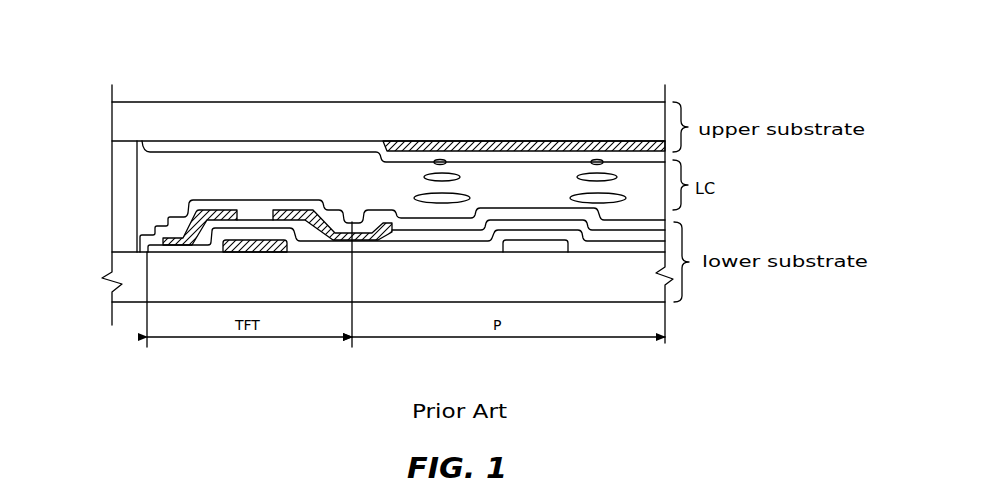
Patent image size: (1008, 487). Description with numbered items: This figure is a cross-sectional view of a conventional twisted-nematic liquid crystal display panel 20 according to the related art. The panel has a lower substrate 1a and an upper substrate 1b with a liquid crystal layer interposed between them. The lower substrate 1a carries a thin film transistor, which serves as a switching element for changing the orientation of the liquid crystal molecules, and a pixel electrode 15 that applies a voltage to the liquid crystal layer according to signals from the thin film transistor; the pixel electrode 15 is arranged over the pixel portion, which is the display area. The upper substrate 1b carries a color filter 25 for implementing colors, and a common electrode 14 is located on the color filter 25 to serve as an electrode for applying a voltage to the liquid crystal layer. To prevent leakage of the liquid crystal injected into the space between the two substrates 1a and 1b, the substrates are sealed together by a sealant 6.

The liquid crystal display panel 20 is at (250, 90).
The lower substrate 1a is at (335, 112).
The upper substrate 1b is at (128, 295).
The sealant 6 is at (113, 196).
The common electrode 14 is at (637, 143).
The color filter 25 is at (555, 143).
The pixel electrode 15 is at (660, 233).